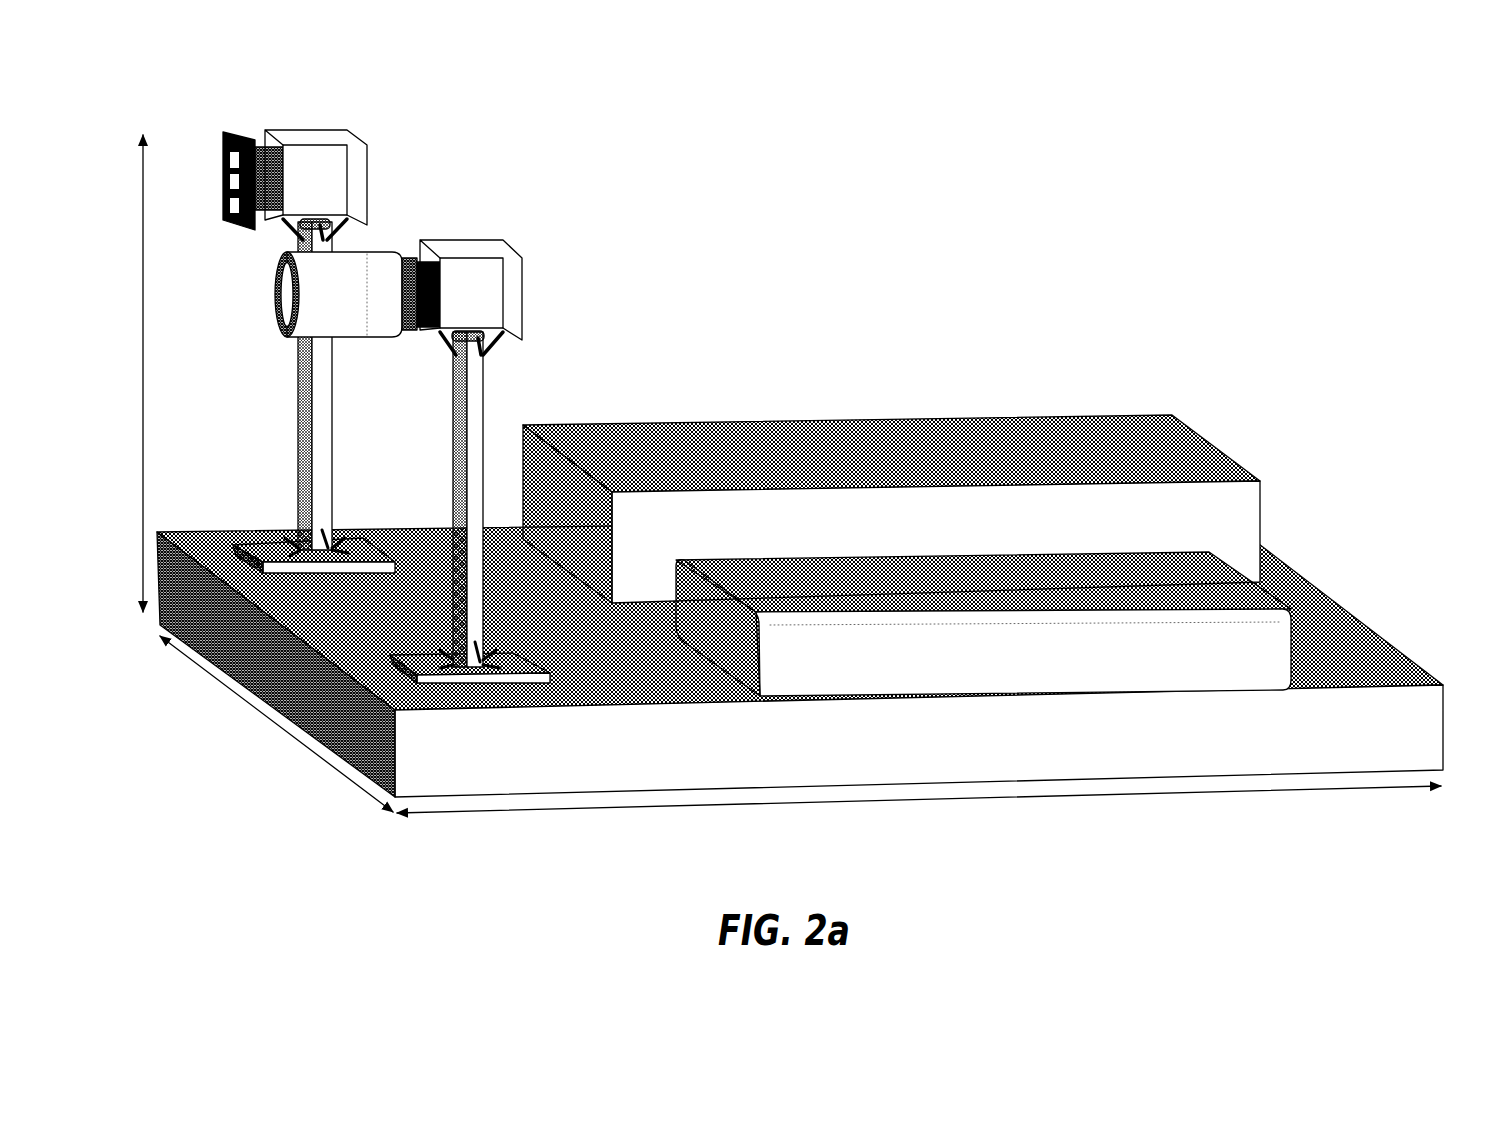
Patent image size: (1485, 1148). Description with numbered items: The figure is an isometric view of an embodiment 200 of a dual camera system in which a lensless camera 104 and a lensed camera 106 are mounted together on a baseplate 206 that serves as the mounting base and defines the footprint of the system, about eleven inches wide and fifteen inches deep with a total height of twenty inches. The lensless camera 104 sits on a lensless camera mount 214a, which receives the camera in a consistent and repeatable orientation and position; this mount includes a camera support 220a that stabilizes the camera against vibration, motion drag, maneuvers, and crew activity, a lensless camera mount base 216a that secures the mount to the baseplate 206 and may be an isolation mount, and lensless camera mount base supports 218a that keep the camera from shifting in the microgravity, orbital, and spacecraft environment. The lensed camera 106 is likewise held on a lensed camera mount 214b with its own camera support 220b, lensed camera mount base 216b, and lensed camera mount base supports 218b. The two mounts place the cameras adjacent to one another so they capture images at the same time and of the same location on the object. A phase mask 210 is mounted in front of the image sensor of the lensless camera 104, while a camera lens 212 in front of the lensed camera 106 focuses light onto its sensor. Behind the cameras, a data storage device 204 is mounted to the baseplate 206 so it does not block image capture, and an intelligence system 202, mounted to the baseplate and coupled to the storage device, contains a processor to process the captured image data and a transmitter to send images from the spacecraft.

The lensless camera 104 is at (295, 174).
The lensed camera 106 is at (482, 290).
The embodiment of the system 200 is at (777, 447).
The intelligence system 202 is at (1135, 418).
The data storage device 204 is at (1275, 605).
The baseplate 206 is at (1378, 648).
The phase mask 210 is at (233, 226).
The camera lens 212 is at (290, 340).
The lensless camera mount 214a is at (330, 402).
The lensed camera mount 214b is at (487, 412).
The lensless camera mount base 216a is at (362, 533).
The lensed camera mount base 216b is at (530, 660).
The lensless camera mount base supports 218a is at (300, 532).
The lensed camera mount base supports 218b is at (456, 645).
The camera support 220a is at (298, 238).
The camera support 220b is at (456, 358).